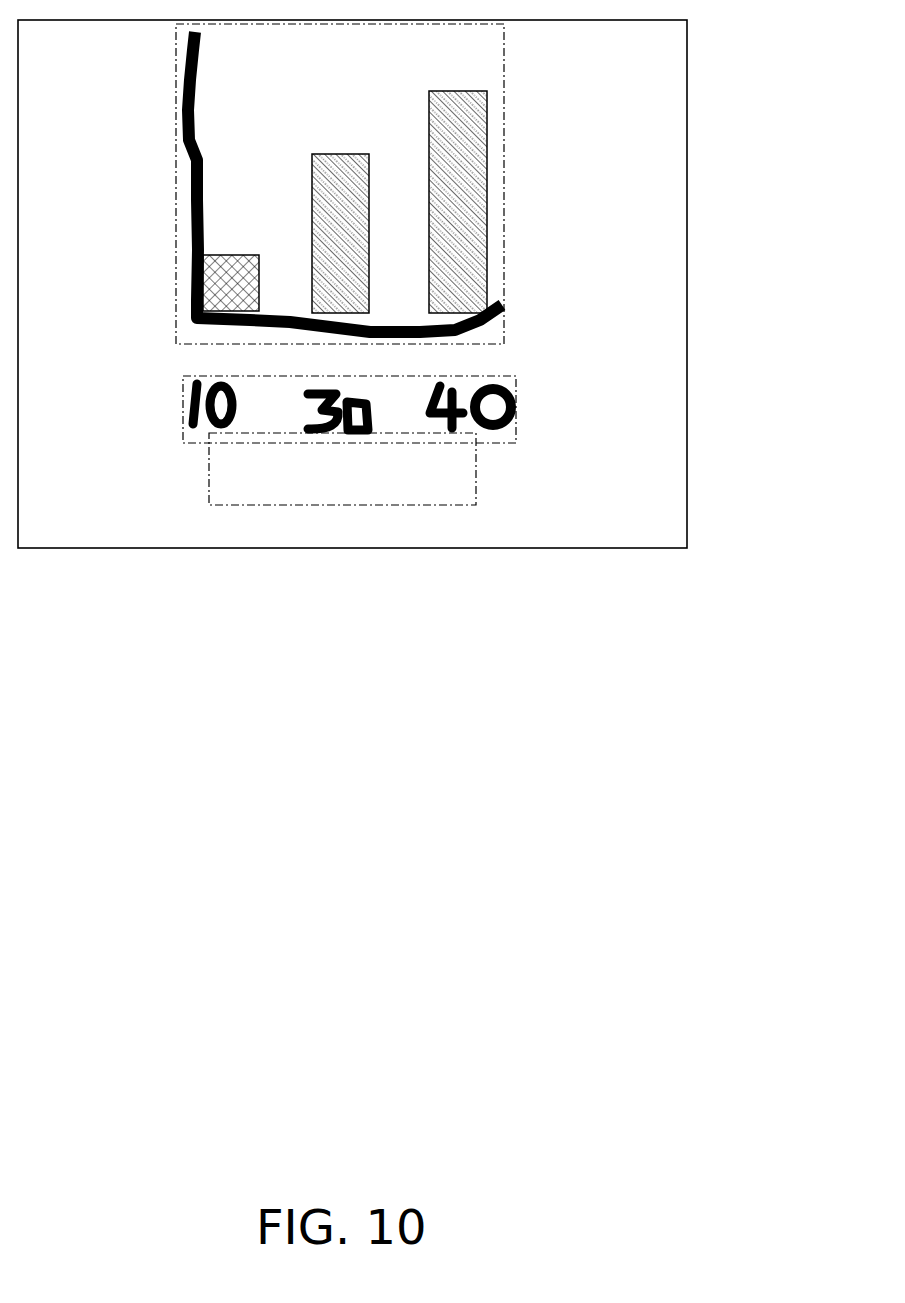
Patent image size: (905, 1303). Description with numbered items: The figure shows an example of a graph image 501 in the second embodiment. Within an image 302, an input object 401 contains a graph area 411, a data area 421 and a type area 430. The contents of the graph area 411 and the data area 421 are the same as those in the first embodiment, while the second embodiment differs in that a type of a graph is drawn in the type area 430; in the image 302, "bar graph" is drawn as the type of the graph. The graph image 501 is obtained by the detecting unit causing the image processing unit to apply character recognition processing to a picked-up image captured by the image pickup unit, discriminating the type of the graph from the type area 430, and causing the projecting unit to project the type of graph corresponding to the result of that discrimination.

The image 302 is at (690, 50).
The graph area 411 is at (505, 84).
The graph image 501 is at (518, 184).
The input object 401 is at (530, 298).
The data area 421 is at (516, 388).
The type area 430 is at (476, 475).